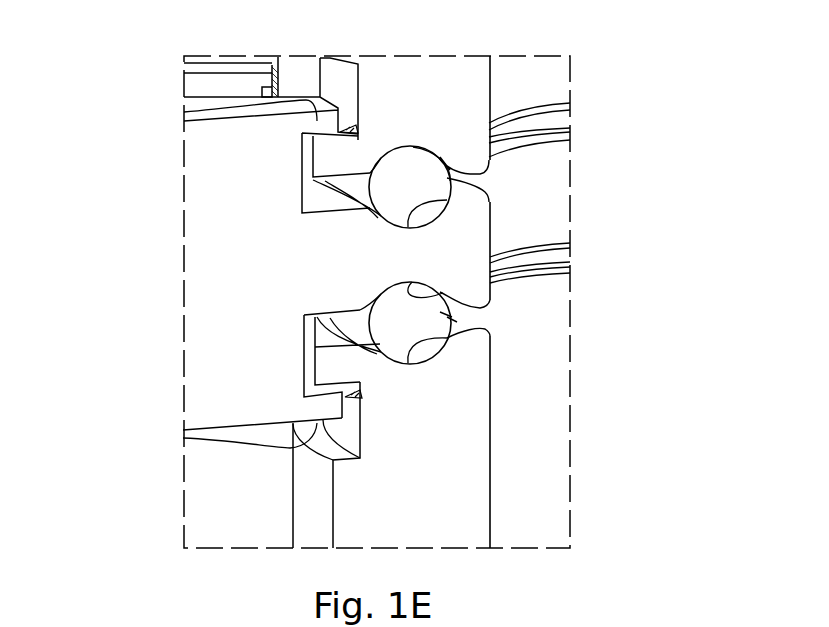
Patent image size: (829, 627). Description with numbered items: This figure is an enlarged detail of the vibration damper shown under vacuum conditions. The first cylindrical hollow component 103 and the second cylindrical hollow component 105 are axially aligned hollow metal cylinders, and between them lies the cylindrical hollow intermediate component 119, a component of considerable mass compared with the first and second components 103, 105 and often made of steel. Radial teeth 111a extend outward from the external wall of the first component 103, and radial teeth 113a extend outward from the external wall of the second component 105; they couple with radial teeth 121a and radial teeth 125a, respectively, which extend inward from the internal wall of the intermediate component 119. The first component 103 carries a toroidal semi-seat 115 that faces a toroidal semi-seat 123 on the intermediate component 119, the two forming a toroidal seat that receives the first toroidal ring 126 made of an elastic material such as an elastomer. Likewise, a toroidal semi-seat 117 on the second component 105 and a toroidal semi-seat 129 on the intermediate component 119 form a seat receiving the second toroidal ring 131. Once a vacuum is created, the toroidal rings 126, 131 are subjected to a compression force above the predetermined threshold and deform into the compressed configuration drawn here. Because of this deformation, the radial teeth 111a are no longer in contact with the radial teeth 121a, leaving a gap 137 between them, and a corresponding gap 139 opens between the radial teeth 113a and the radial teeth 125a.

The first cylindrical hollow component 103 is at (537, 458).
The second cylindrical hollow component 105 is at (457, 83).
The radial teeth 111a is at (332, 363).
The radial teeth 113a is at (332, 157).
The toroidal semi-seat 115 is at (447, 343).
The toroidal semi-seat 117 is at (447, 178).
The intermediate component 119 is at (245, 264).
The radial teeth 121a is at (230, 433).
The toroidal semi-seat 123 is at (442, 290).
The radial teeth 125a is at (186, 108).
The first toroidal ring 126 is at (390, 328).
The toroidal semi-seat 129 is at (440, 207).
The second toroidal ring 131 is at (393, 195).
The gap 137 is at (364, 396).
The gap 139 is at (358, 128).